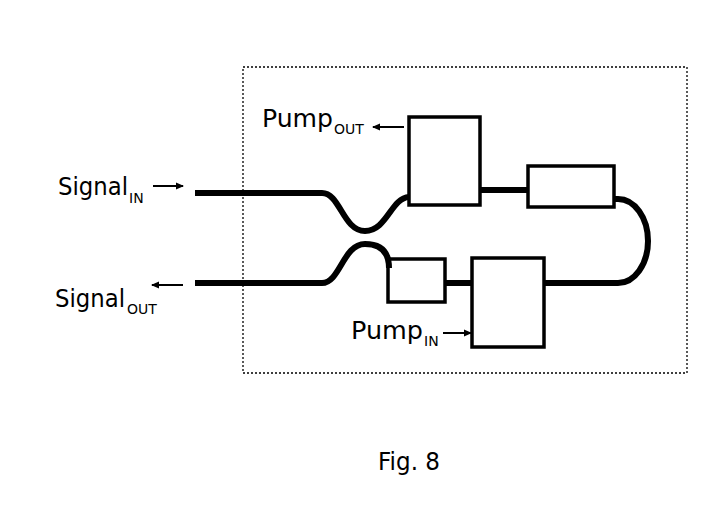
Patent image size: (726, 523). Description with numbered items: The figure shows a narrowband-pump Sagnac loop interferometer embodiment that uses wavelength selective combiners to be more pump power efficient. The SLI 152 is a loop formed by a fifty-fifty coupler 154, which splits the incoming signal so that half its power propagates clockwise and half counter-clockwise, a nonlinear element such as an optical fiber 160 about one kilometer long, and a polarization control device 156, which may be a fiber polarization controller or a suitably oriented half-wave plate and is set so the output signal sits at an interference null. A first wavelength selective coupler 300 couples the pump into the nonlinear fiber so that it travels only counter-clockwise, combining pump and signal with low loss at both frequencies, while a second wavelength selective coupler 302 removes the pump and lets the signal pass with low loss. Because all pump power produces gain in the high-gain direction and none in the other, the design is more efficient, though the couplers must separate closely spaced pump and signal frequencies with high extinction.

The SLI 152 is at (465, 204).
The 50/50 coupler 154 is at (302, 222).
The polarization control device 156 is at (416, 266).
The optical fiber 160 is at (571, 170).
The first wavelength selective coupler 300 is at (508, 288).
The second wavelength selective coupler 302 is at (444, 145).